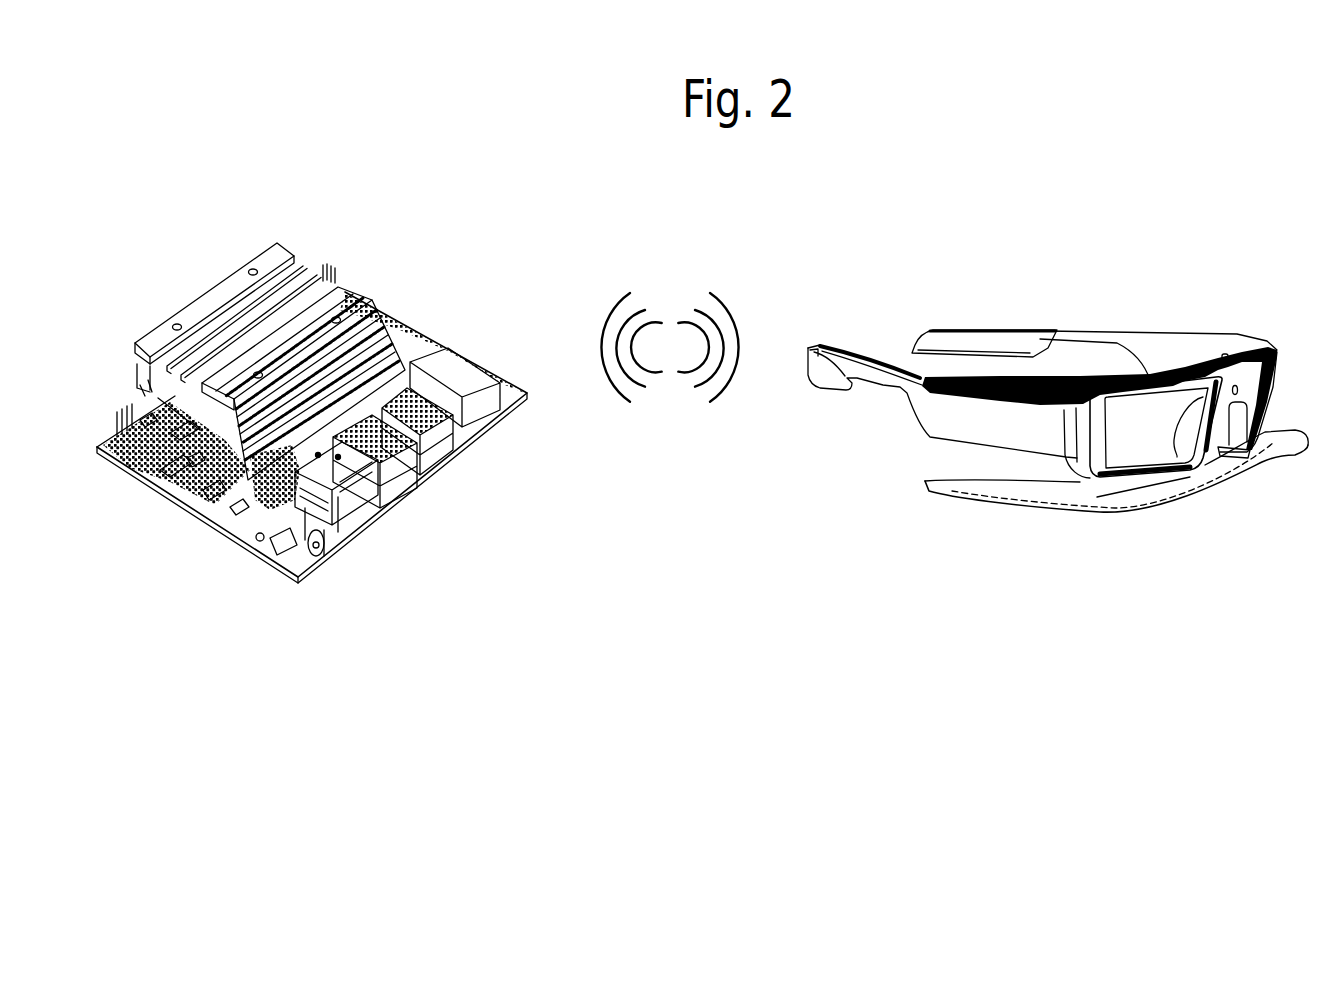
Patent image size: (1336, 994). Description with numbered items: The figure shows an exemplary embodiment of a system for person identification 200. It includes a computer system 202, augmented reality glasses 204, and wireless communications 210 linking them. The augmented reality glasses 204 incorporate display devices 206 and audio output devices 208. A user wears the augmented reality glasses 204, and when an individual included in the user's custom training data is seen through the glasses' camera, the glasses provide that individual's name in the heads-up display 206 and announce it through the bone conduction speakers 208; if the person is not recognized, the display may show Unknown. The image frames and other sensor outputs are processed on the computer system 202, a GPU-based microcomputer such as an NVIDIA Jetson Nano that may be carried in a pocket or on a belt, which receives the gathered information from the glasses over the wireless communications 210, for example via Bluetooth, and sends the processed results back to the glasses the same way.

The system for person identification 200 is at (1152, 724).
The computer system 202 is at (425, 337).
The augmented reality glasses 204 is at (1140, 352).
The display device 206 is at (1155, 442).
The audio output device 208 is at (990, 333).
The wireless communications 210 is at (717, 292).